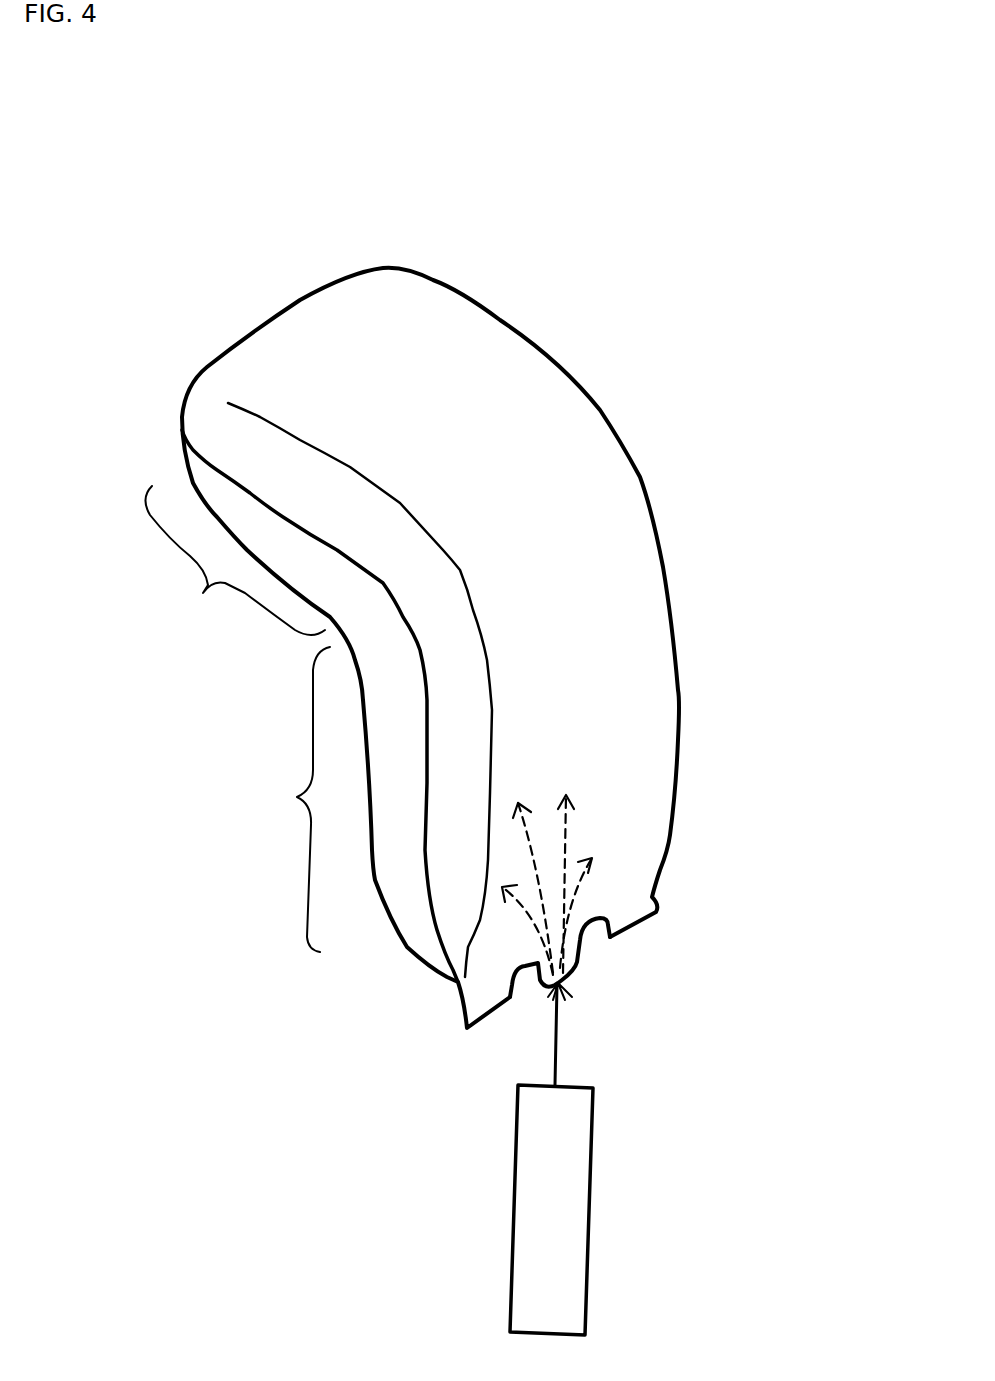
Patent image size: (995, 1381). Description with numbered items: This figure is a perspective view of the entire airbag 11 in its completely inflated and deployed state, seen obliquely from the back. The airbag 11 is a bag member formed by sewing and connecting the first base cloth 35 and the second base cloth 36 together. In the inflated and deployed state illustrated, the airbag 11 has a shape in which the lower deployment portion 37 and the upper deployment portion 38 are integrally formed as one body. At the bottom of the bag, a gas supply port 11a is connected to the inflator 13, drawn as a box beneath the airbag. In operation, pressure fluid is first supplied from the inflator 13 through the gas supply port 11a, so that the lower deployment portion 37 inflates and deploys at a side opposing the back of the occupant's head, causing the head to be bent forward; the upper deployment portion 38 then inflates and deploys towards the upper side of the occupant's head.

The airbag 11 is at (640, 255).
The gas supply port 11a is at (577, 973).
The inflator 13 is at (590, 1232).
The first base cloth 35 is at (210, 487).
The second base cloth 36 is at (207, 392).
The lower deployment portion 37 is at (293, 799).
The upper deployment portion 38 is at (235, 560).